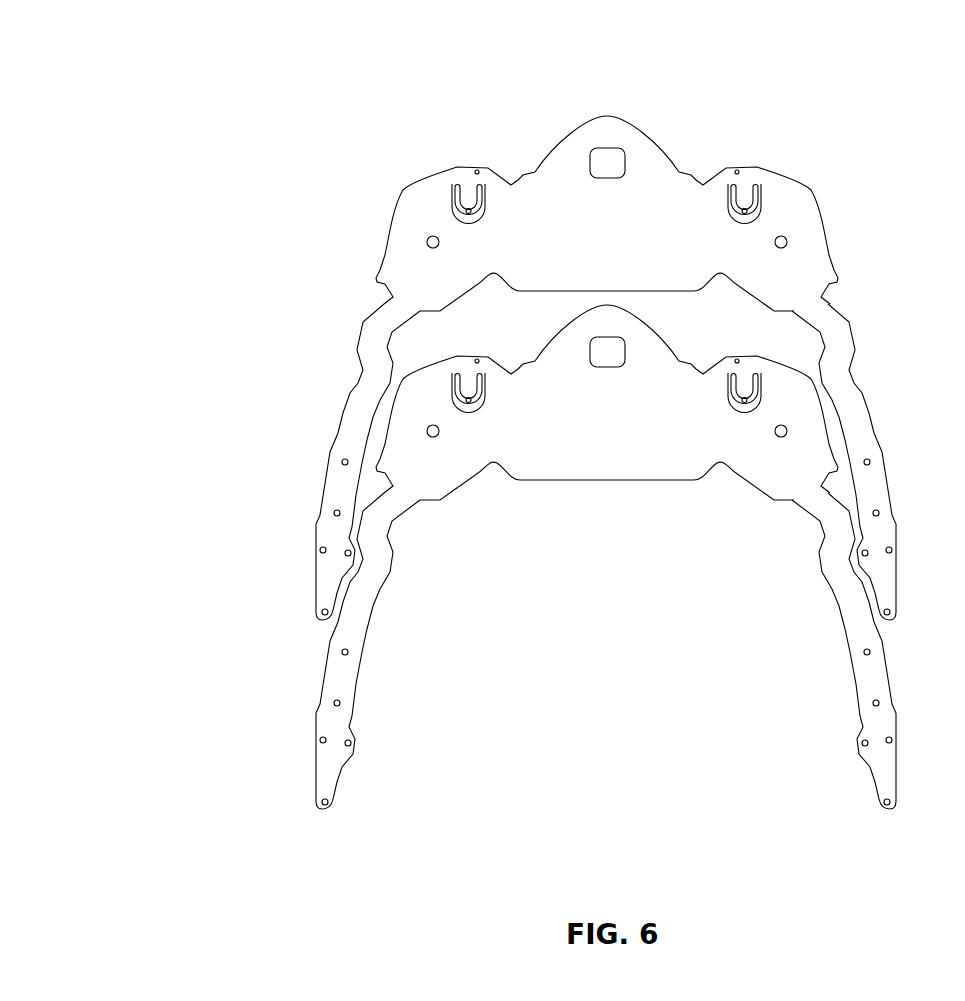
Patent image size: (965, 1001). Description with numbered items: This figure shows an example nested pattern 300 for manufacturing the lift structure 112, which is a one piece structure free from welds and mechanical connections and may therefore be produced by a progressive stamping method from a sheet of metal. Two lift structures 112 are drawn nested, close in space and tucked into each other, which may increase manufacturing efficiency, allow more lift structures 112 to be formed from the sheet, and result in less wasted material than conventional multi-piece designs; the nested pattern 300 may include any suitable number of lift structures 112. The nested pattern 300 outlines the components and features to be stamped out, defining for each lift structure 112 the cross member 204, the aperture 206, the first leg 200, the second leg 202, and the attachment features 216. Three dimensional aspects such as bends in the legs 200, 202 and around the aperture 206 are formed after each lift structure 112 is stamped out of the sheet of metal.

The nested pattern 300 is at (126, 46).
The lift structure 112 is at (386, 166).
The first leg 200 is at (362, 393).
The second leg 202 is at (860, 443).
The cross member 204 is at (647, 227).
The aperture 206 is at (610, 163).
The attachment features 216 is at (467, 212).